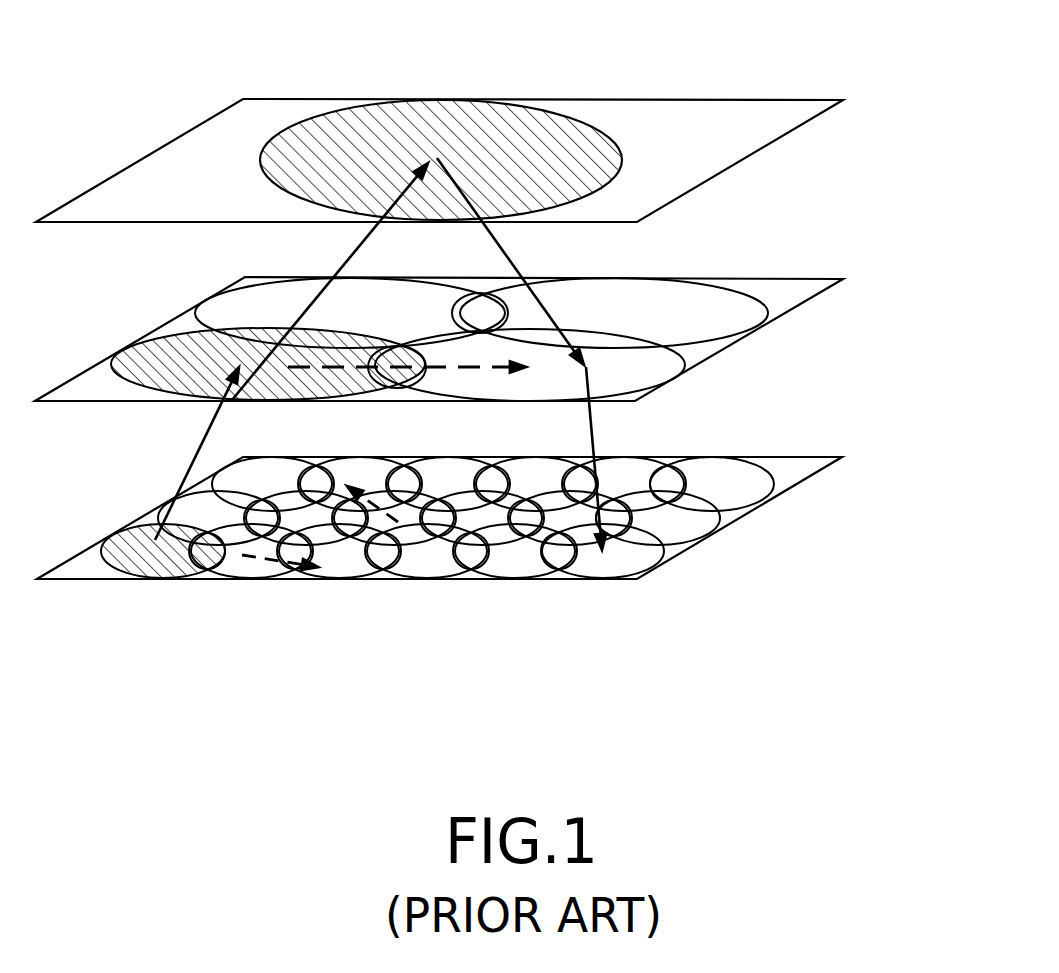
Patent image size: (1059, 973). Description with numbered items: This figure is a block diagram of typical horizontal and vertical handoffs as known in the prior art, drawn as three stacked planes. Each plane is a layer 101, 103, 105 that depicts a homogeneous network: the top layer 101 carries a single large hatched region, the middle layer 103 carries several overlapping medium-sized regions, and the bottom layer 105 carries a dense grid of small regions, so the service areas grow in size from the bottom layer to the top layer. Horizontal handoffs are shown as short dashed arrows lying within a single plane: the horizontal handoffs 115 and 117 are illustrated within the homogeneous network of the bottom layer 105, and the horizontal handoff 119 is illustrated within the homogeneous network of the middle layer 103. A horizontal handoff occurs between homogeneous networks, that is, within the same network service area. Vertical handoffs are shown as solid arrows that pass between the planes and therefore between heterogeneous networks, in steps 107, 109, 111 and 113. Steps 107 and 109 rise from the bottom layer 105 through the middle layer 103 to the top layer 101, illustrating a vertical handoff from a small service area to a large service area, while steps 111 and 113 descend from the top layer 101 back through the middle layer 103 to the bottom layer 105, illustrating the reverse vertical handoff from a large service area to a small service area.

The layer 101 is at (458, 111).
The layer 103 is at (460, 279).
The layer 105 is at (458, 469).
The vertical handoff step 107 is at (207, 453).
The vertical handoff step 109 is at (330, 281).
The vertical handoff step 111 is at (510, 261).
The vertical handoff step 113 is at (613, 458).
The horizontal handoff 115 is at (302, 558).
The horizontal handoff 117 is at (370, 488).
The horizontal handoff 119 is at (407, 379).